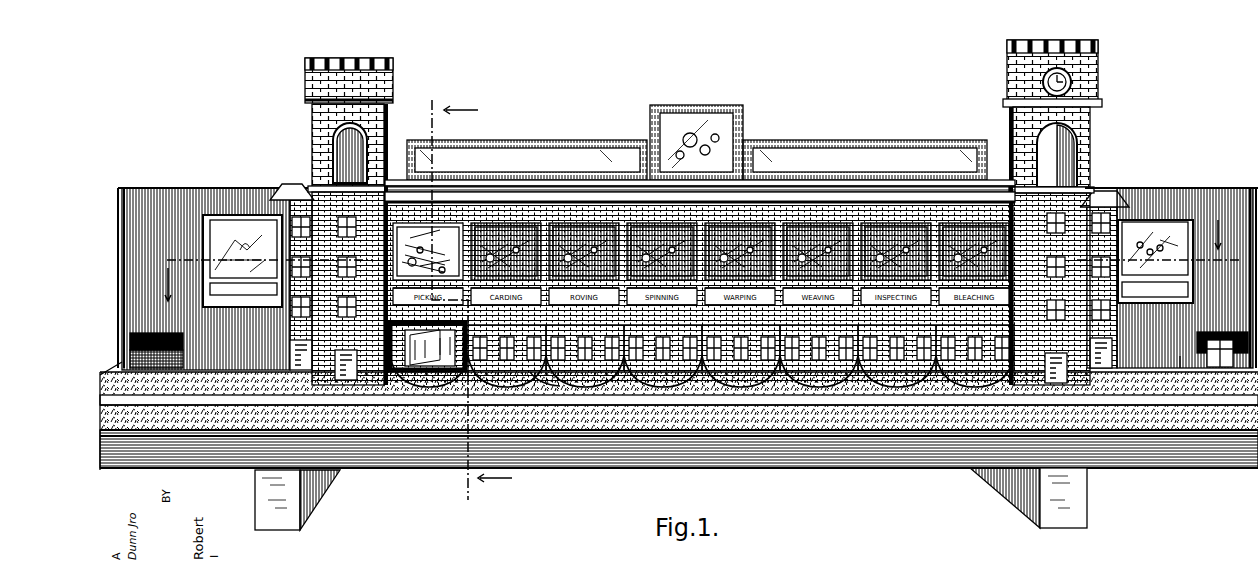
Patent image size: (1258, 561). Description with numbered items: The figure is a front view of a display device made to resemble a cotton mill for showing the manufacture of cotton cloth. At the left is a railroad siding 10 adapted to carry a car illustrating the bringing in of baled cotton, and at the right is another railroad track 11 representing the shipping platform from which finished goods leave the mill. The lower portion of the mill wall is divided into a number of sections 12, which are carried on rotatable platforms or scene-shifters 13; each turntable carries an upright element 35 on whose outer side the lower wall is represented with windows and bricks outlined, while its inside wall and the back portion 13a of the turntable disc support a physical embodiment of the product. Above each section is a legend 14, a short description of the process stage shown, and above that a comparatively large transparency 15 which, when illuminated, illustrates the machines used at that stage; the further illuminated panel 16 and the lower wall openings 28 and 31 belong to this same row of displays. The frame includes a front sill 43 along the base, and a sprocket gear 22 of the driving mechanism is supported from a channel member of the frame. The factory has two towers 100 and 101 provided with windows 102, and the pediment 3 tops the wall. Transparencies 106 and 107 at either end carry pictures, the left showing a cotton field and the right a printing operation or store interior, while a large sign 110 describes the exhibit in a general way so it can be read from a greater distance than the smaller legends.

The section line 3- 3 is at (469, 301).
The railroad siding 10 is at (140, 372).
The railroad track 11 is at (1165, 368).
The sections 12 is at (422, 372).
The rotatable platforms or scene-shifters (turntables) 13 is at (990, 380).
The back portion of the turntable disc 13a is at (500, 378).
The legend 14 is at (440, 258).
The transparency 15 is at (520, 240).
The display window 16 is at (776, 224).
The sprocket gear 22 is at (402, 372).
The lower story windows 28 is at (880, 374).
The loading platform 31 is at (1163, 369).
The upright element 35 is at (783, 372).
The front sill 43 is at (819, 462).
The tower 100 is at (320, 89).
The tower 101 is at (1011, 70).
The windows 102 is at (1077, 208).
The transparency 106 is at (226, 212).
The transparency 107 is at (1178, 222).
The sign 110 is at (546, 153).